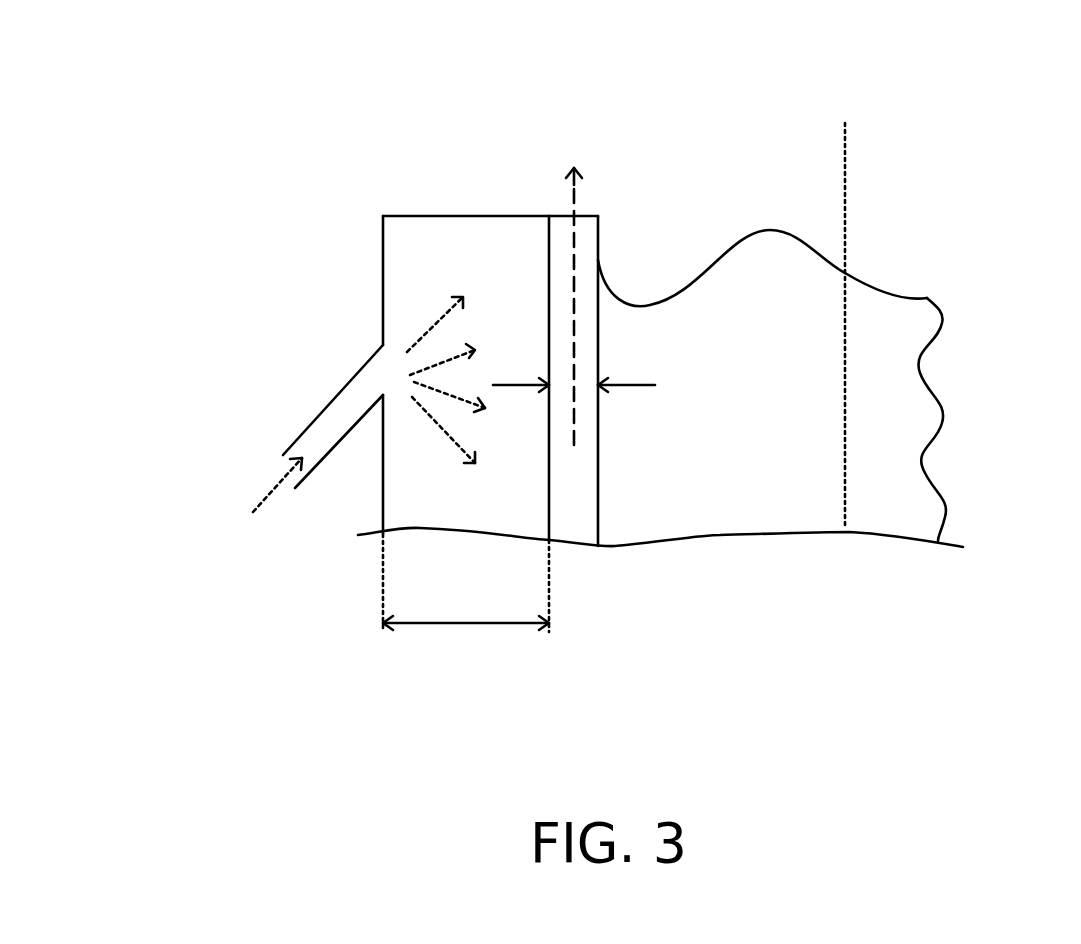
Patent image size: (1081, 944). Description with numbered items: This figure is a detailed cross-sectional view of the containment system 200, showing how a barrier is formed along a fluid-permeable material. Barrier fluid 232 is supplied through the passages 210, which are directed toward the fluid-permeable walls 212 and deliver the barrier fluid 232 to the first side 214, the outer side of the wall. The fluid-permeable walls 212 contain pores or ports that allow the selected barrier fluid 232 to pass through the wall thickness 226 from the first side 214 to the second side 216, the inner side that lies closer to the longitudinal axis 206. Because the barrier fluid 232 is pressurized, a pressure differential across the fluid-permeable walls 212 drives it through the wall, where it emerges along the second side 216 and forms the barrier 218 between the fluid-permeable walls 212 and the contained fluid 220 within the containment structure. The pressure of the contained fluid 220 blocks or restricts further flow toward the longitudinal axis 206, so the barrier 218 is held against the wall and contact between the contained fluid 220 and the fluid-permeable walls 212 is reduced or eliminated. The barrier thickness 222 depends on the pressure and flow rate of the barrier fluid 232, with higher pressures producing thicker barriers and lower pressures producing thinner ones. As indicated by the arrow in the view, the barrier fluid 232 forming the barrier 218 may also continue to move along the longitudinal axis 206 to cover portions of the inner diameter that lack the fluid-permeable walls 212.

The containment system 200 is at (937, 92).
The longitudinal axis 206 is at (845, 218).
The passages 210 is at (313, 423).
The fluid-permeable walls 212 is at (402, 268).
The first side 214 is at (383, 327).
The second side 216 is at (549, 510).
The barrier 218 is at (598, 231).
The contained fluid 220 is at (786, 418).
The barrier thickness 222 is at (655, 385).
The wall thickness 226 is at (468, 623).
The barrier fluid 232 is at (227, 592).